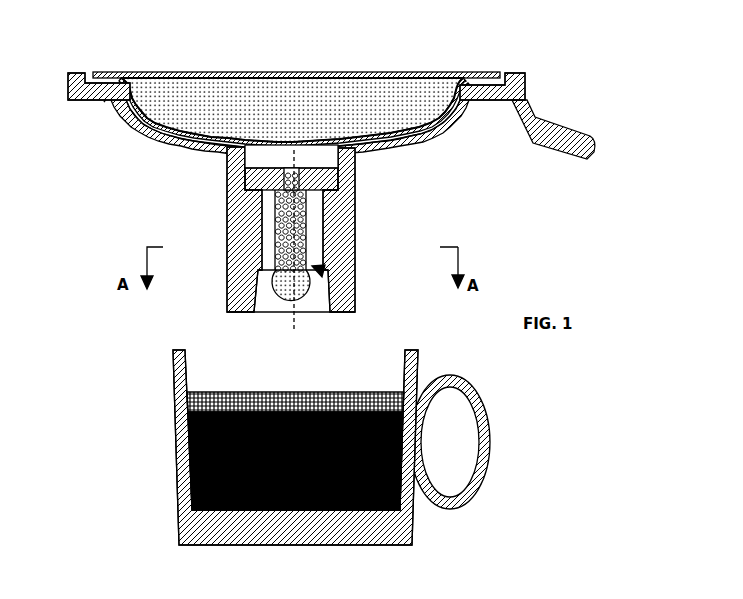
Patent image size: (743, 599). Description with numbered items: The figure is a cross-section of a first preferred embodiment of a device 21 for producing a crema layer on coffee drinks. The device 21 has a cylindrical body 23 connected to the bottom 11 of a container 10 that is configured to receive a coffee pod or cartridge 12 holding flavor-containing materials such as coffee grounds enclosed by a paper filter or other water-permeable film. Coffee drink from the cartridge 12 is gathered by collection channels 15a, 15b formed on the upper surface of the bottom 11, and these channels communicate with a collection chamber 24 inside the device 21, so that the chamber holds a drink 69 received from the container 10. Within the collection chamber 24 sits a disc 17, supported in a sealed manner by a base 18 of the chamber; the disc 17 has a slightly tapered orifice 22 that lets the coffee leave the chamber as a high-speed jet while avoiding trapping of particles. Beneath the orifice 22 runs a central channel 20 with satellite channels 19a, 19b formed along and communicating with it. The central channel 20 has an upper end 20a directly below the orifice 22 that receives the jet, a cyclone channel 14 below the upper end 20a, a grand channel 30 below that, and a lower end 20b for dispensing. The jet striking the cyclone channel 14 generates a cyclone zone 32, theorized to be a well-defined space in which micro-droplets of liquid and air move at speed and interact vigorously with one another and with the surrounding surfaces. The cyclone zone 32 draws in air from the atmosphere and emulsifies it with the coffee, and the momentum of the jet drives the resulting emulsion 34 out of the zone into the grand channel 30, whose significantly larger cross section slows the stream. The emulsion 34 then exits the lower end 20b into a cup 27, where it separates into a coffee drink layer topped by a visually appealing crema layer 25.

The container 10 is at (106, 126).
The bottom 11 is at (173, 138).
The coffee pod or cartridge 12 is at (168, 63).
The cyclone channel 14 is at (302, 244).
The collection channel 15a is at (425, 133).
The collection channel 15b is at (188, 125).
The disc 17 is at (357, 172).
The base 18 is at (357, 196).
The satellite channel 19a is at (313, 228).
The satellite channel 19b is at (267, 256).
The central channel 20 is at (324, 270).
The upper end 20a is at (307, 200).
The lower end 20b is at (310, 311).
The device 21 is at (434, 226).
The orifice 22 is at (277, 203).
The cylindrical body 23 is at (227, 183).
The collection chamber 24 is at (257, 153).
The crema layer 25 is at (172, 407).
The cup 27 is at (193, 530).
The grand channel 30 is at (267, 293).
The cyclone zone 32 is at (277, 235).
The emulsion 34 is at (282, 298).
The drink 69 is at (307, 157).